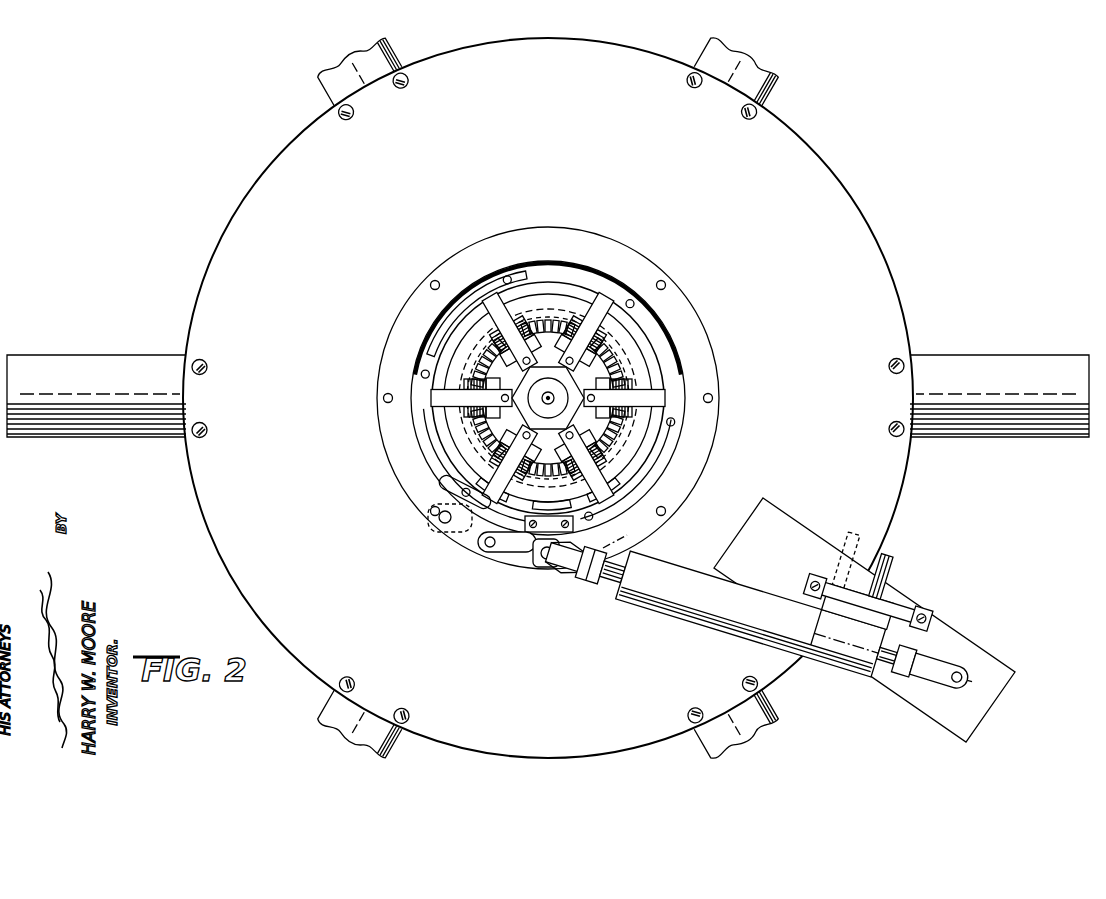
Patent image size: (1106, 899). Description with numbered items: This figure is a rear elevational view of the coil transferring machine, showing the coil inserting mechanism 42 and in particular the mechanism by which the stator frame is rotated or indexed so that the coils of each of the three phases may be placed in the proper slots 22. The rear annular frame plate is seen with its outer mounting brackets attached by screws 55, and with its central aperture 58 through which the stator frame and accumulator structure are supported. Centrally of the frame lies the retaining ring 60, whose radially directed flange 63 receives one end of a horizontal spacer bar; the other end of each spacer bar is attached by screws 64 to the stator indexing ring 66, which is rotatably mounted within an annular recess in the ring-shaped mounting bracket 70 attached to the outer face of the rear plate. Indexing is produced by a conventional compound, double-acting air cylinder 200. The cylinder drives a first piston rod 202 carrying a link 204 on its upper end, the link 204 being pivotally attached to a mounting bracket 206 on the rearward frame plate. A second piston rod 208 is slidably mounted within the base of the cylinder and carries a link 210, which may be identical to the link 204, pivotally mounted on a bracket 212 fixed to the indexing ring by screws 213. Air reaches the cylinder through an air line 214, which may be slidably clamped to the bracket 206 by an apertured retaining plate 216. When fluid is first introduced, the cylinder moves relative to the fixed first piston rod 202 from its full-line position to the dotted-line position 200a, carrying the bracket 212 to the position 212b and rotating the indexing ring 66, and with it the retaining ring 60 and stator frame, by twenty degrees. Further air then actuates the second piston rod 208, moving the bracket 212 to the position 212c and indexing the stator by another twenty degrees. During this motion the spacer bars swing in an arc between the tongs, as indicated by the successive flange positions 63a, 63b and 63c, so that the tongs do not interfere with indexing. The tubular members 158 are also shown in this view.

The slots 22 is at (432, 728).
The coil inserting mechanism 42 is at (835, 146).
The screws 55 is at (411, 85).
The central aperture 58 is at (558, 283).
The retaining ring 60 is at (620, 330).
The radially directed flange 63 is at (518, 288).
The flange position 63a is at (591, 499).
The flange position 63b is at (554, 482).
The flange position 63c is at (508, 478).
The screws 64 is at (627, 300).
The stator indexing ring 66 is at (667, 340).
The ring-shaped mounting bracket 70 is at (612, 252).
The tubular members 158 is at (390, 66).
The air cylinder 200 is at (680, 572).
The cylinder position 200a is at (618, 542).
The first piston rod 202 is at (892, 678).
The link 204 is at (930, 662).
The mounting bracket 206 is at (980, 658).
The second piston rod 208 is at (615, 600).
The link 210 is at (575, 570).
The bracket 212 is at (516, 560).
The bracket position 212b is at (478, 542).
The bracket position 212c is at (432, 510).
The screws 213 is at (526, 524).
The air line 214 is at (906, 560).
The apertured retaining plate 216 is at (924, 610).